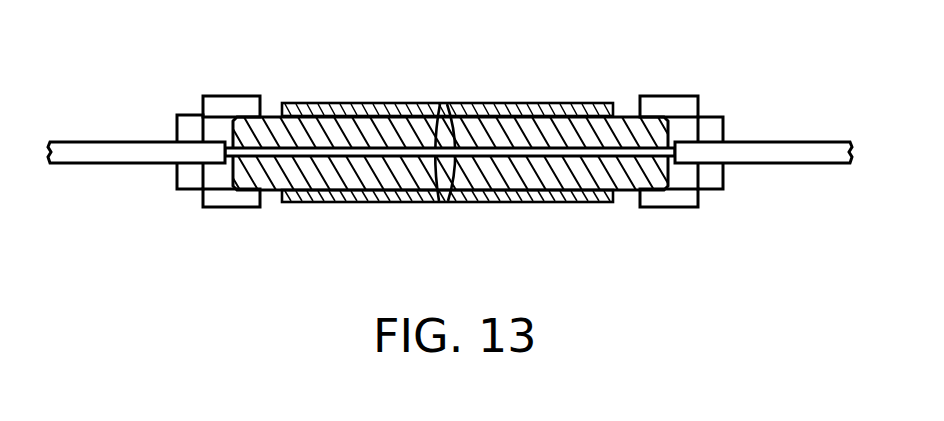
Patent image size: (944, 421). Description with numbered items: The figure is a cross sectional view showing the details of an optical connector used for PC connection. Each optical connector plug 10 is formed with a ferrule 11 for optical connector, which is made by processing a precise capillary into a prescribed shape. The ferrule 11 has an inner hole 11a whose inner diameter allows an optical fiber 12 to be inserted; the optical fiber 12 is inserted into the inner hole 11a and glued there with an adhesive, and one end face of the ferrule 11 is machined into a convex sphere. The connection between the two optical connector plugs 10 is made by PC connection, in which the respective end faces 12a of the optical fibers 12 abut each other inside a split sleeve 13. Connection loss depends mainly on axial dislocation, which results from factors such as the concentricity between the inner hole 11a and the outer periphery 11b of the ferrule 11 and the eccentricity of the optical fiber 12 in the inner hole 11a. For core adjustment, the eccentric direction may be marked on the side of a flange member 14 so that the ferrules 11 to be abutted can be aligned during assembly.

The optical connector plug 10 is at (189, 202).
The ferrule for optical connector 11 is at (270, 115).
The inner hole 11a is at (337, 200).
The outer periphery 11b is at (332, 104).
The optical fiber 12 is at (368, 115).
The end face 12a is at (393, 202).
The split sleeve 13 is at (475, 205).
The flange member 14 is at (220, 95).